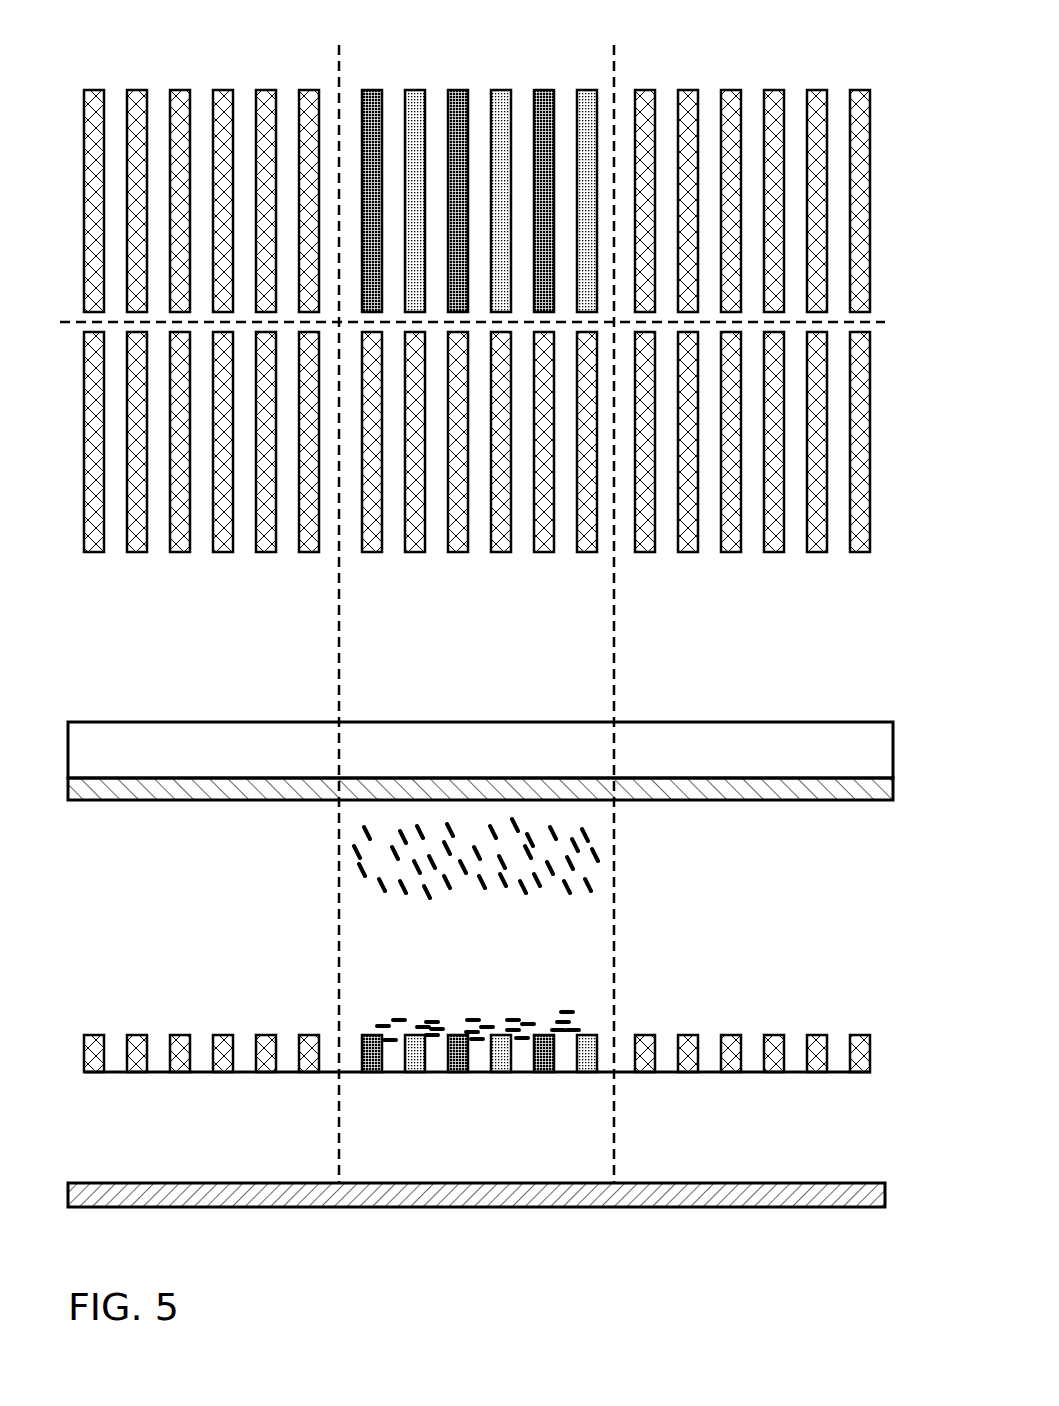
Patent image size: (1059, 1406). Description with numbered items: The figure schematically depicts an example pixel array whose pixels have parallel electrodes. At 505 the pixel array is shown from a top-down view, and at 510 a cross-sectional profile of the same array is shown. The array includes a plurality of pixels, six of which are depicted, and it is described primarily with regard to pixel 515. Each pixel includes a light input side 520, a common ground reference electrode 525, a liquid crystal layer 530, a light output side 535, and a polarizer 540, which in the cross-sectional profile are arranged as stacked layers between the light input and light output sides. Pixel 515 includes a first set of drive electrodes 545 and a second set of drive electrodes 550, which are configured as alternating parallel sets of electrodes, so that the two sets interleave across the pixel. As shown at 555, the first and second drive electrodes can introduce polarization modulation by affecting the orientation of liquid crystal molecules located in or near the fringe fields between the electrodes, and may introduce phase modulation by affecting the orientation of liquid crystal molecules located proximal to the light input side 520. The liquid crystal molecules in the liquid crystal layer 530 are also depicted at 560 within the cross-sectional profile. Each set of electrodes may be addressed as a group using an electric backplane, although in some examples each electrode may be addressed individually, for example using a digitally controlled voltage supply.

The top-down view 505 is at (118, 33).
The cross-sectional profile 510 is at (104, 655).
The pixel 515 is at (532, 30).
The light input side 520 is at (868, 764).
The common ground reference electrode 525 is at (808, 800).
The liquid crystal (LC) layer 530 is at (808, 878).
The light output side 535 is at (856, 1107).
The polarizer 540 is at (815, 1207).
The first set of drive electrodes 545 is at (543, 90).
The second set of drive electrodes 550 is at (415, 90).
The polarization and phase modulation depiction 555 is at (478, 1000).
The dispersed particles 560 is at (475, 903).